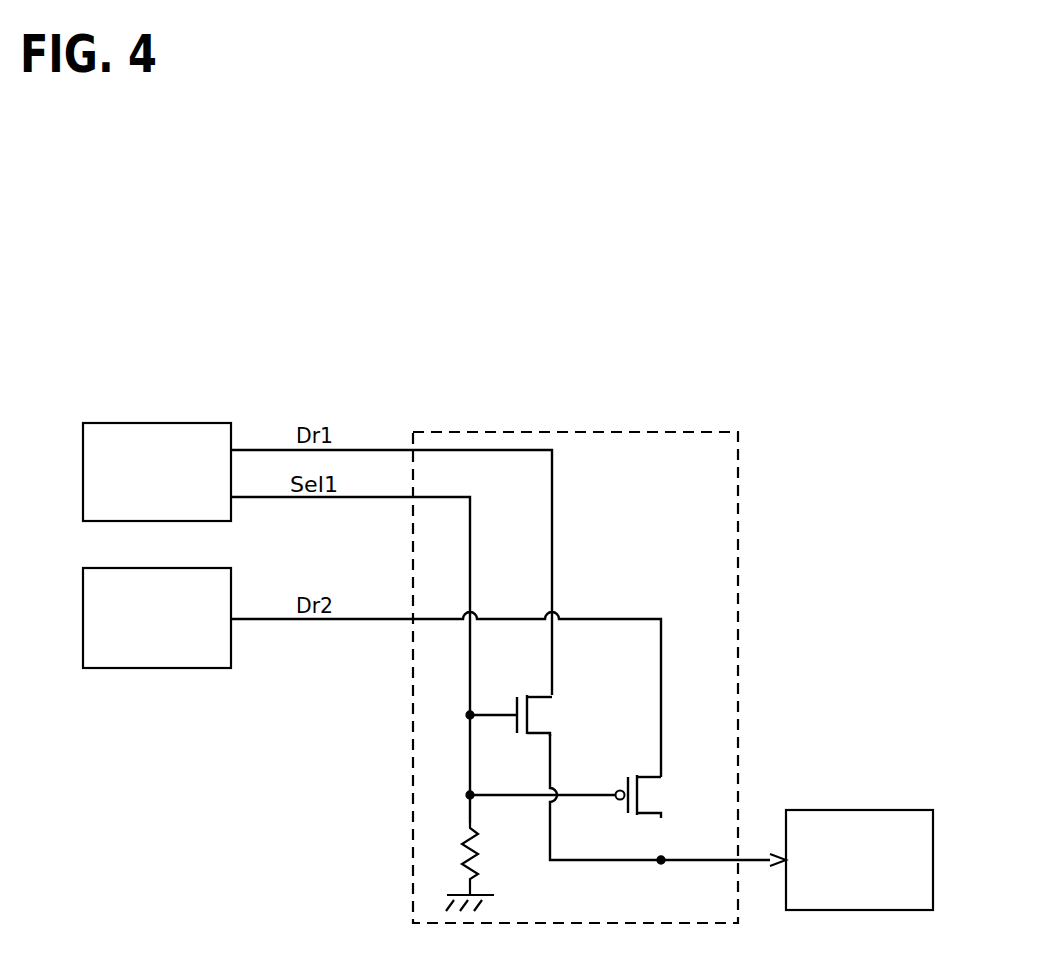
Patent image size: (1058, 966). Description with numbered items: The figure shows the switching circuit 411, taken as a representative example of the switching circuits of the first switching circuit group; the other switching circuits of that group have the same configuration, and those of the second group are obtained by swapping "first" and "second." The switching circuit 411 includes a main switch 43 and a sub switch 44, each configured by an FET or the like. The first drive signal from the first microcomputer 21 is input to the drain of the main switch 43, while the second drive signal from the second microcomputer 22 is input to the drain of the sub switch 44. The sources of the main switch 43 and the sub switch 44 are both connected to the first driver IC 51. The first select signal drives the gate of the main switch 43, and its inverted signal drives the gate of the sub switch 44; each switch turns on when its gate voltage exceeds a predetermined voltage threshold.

The first microcomputer 21 is at (83, 471).
The second microcomputer 22 is at (83, 616).
The switching circuit 411 is at (657, 431).
The main switch 43 is at (542, 713).
The sub switch 44 is at (652, 793).
The first driver IC 51 is at (865, 810).